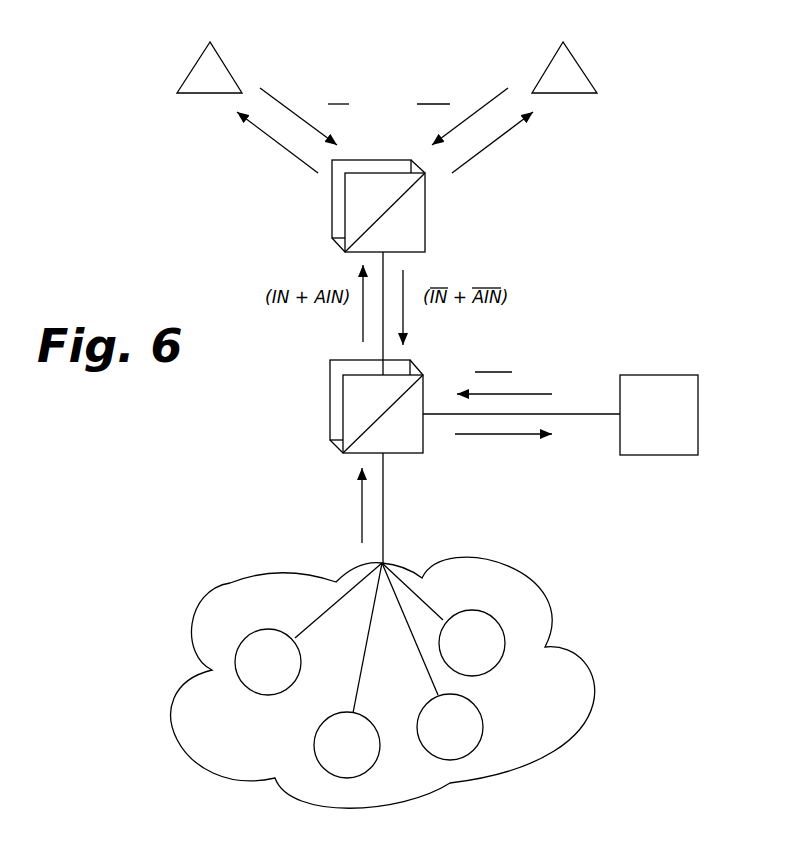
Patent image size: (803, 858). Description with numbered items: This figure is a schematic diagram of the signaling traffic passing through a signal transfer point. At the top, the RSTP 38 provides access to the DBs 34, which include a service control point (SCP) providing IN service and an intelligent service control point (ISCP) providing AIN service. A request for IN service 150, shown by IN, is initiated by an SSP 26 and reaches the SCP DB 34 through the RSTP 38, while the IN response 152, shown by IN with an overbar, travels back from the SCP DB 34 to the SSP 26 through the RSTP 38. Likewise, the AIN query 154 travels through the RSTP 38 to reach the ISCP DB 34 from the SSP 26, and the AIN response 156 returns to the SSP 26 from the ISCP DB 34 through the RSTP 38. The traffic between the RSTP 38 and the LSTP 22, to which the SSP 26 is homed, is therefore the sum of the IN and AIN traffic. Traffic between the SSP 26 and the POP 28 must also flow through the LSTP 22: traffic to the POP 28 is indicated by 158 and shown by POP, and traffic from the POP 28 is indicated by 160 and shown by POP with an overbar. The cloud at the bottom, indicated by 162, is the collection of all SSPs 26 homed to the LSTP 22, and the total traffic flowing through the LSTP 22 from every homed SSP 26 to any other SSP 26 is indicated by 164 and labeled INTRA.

The LSTP 22 is at (330, 418).
The SSP 26 is at (250, 630).
The POP 28 is at (658, 457).
The DBs 34 is at (203, 97).
The RSTP 38 is at (332, 203).
The request for IN service 150 is at (268, 143).
The IN response 152 is at (292, 110).
The AIN query 154 is at (500, 143).
The AIN response 156 is at (478, 110).
The traffic to POP 158 is at (518, 435).
The traffic from POP 160 is at (527, 393).
The collection of all SSPs homed to LSTP 162 is at (550, 595).
The INTRA traffic 164 is at (360, 518).